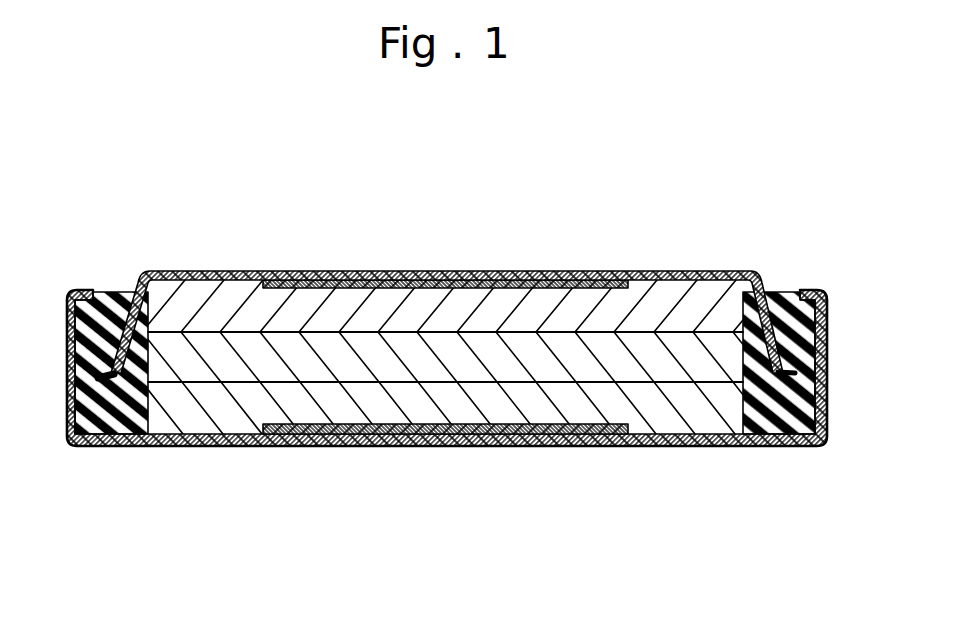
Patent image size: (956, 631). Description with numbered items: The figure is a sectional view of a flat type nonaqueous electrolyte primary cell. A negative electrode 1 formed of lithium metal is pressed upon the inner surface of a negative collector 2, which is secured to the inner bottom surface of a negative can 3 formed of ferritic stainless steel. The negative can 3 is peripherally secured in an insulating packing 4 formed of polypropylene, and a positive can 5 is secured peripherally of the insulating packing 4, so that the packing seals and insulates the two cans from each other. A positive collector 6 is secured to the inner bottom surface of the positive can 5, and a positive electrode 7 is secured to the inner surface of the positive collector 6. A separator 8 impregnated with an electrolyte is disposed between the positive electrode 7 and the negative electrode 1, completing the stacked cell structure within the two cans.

The negative electrode 1 is at (414, 305).
The negative collector 2 is at (548, 280).
The negative can 3 is at (182, 269).
The insulating packing 4 is at (827, 334).
The positive can 5 is at (727, 437).
The positive collector 6 is at (562, 434).
The positive electrode 7 is at (318, 410).
The separator 8 is at (200, 365).